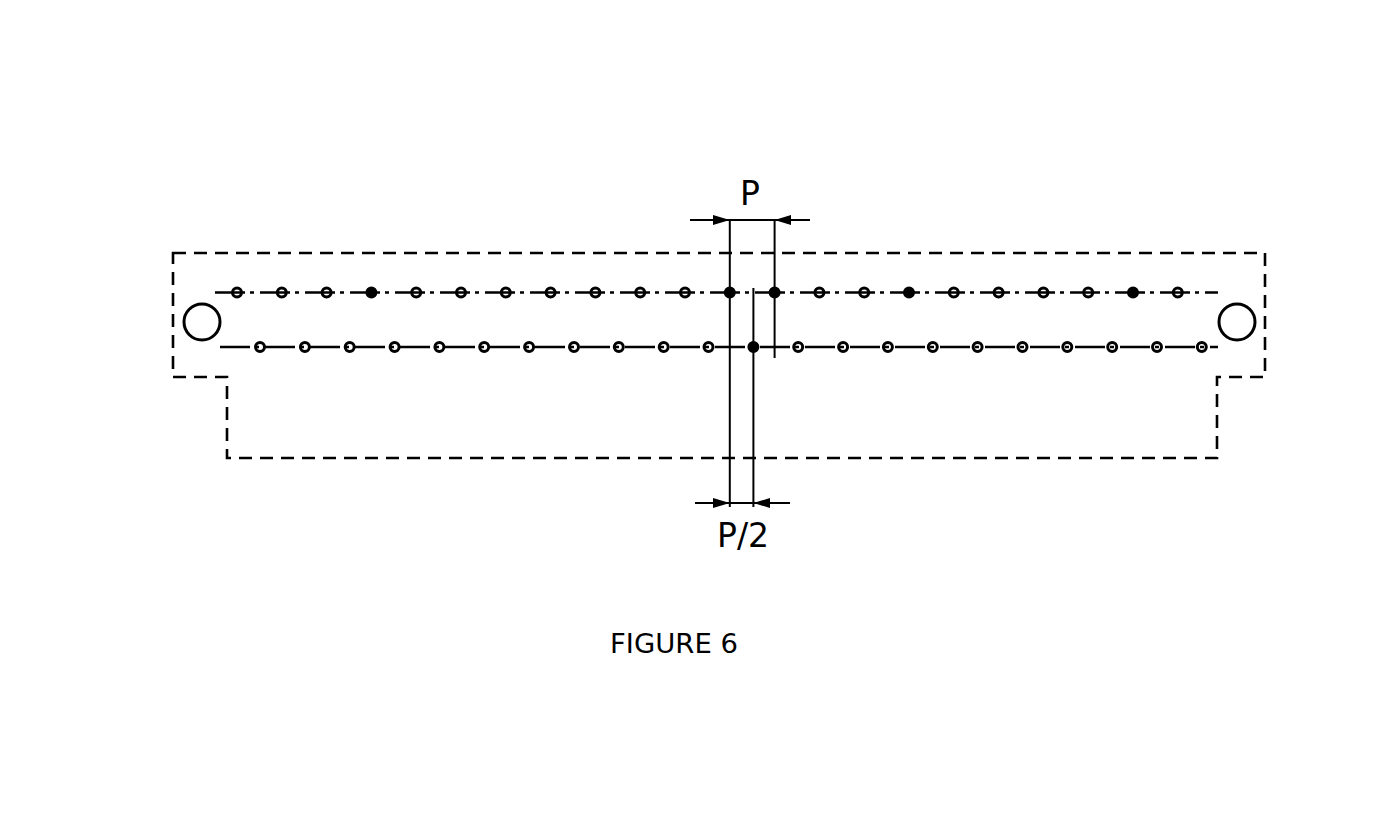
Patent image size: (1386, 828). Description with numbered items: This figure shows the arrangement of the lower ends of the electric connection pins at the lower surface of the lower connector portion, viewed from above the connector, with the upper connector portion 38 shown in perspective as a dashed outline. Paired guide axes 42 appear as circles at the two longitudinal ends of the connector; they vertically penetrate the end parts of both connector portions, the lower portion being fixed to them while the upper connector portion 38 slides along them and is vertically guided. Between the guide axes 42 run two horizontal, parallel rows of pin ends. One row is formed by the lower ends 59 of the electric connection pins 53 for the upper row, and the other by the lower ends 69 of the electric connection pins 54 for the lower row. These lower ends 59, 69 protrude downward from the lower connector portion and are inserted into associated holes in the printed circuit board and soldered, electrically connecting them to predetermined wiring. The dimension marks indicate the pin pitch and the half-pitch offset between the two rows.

The upper connector portion 38 is at (1093, 253).
The guide axes 42 is at (183, 311).
The electric connection pins for upper row 53 is at (953, 280).
The electric connection pins for lower row 54 is at (1068, 365).
The lower ends of electric connection pins for upper row 59 is at (461, 288).
The lower ends of electric connection pins for lower row 69 is at (1022, 352).